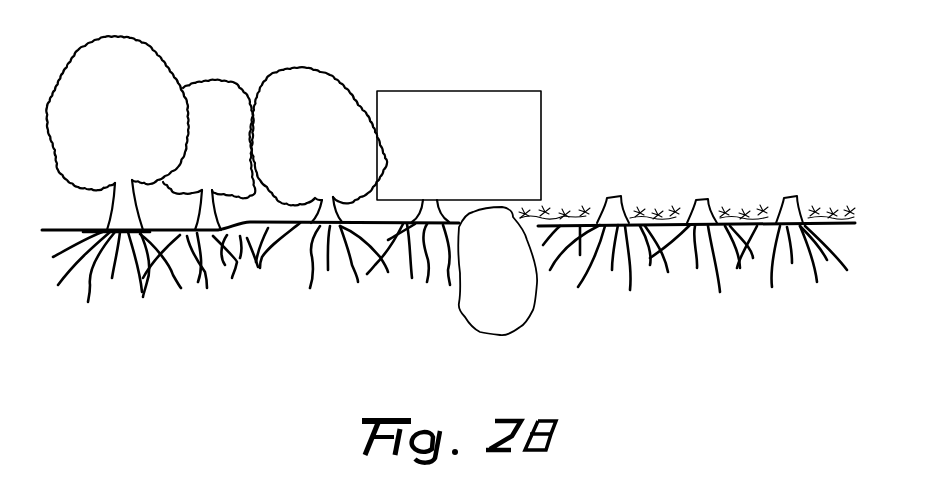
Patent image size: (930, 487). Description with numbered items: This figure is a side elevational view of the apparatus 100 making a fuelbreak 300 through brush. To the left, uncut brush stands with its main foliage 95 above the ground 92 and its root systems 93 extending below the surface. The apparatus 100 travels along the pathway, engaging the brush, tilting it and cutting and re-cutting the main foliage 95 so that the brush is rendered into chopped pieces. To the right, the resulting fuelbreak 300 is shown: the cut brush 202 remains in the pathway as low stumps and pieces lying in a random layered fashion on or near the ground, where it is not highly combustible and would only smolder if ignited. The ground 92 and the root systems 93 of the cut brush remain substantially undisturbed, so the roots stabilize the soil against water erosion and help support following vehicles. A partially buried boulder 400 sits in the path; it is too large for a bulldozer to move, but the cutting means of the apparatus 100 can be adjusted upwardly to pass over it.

The ground 92 is at (314, 367).
The root systems 93 is at (133, 285).
The main foliage 95 is at (323, 145).
The apparatus 100 is at (475, 142).
The cut brush 202 is at (676, 218).
The fuelbreak 300 is at (759, 152).
The partially buried boulder 400 is at (515, 291).